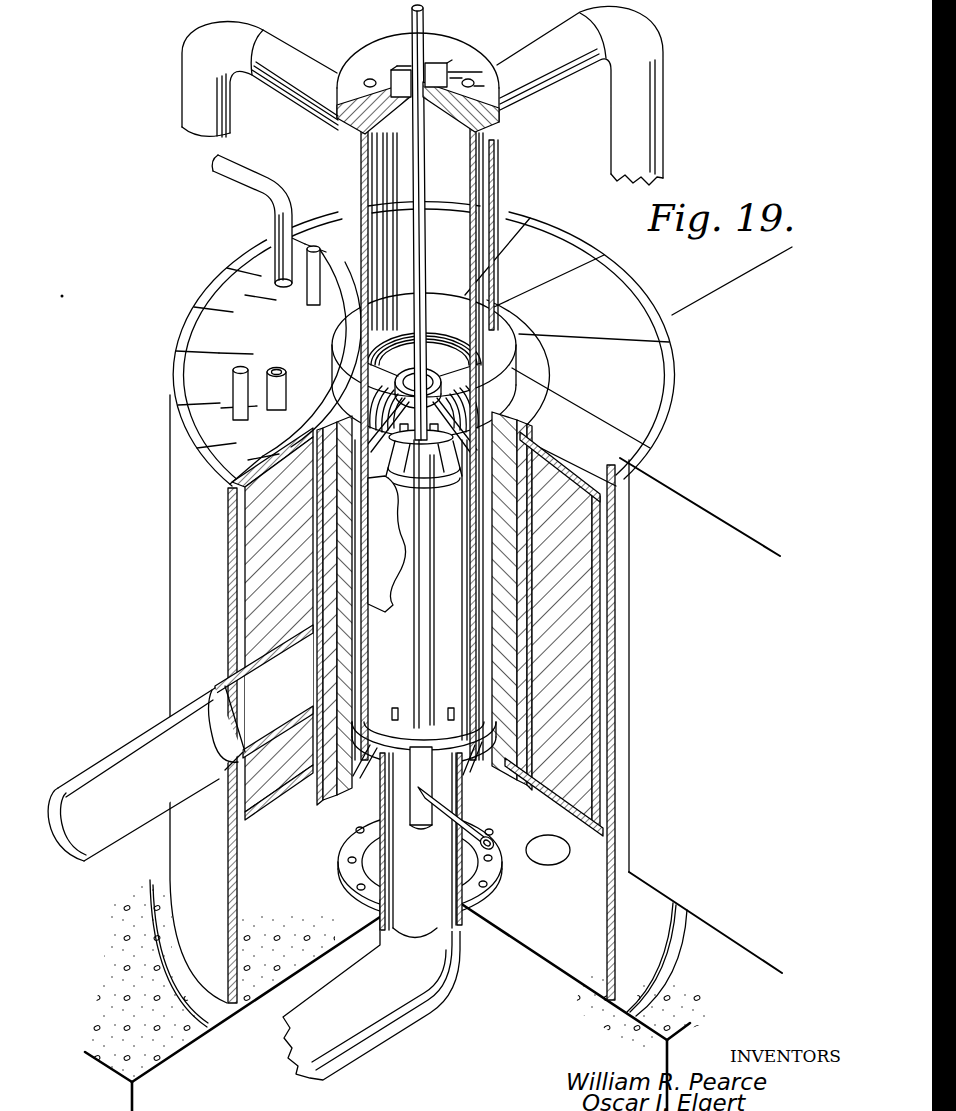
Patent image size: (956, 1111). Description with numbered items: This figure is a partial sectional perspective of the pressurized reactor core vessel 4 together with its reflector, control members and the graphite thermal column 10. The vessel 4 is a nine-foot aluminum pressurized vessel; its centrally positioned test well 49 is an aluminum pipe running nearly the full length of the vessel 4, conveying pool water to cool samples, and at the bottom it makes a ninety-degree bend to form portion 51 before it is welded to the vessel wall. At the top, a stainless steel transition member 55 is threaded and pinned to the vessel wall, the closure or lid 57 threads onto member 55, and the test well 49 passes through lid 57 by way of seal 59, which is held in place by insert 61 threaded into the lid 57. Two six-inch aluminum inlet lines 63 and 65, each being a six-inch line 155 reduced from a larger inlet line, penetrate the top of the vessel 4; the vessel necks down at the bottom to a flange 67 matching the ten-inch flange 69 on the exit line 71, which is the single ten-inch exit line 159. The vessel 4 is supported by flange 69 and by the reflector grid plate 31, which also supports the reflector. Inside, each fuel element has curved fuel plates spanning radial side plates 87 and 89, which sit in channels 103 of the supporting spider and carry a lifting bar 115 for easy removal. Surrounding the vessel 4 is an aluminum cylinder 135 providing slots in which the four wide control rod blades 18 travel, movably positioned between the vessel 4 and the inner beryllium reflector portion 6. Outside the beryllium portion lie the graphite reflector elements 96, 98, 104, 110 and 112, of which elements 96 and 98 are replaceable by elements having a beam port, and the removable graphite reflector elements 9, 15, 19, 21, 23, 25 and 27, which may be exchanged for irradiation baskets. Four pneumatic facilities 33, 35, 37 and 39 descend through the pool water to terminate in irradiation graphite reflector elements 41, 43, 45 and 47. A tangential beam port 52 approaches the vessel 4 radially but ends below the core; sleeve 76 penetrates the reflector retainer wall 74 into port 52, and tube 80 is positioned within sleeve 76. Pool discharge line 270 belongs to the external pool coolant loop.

The pressurized vessel 4 is at (490, 202).
The inner beryllium reflector portion 6 is at (538, 384).
The removable graphite reflector element 9 is at (281, 357).
The thermal column 10 is at (692, 692).
The removable graphite reflector element 15 is at (250, 351).
The control rods 18 is at (391, 557).
The removable graphite reflector element 19 is at (217, 440).
The removable graphite reflector element 21 is at (206, 390).
The removable graphite reflector element 23 is at (212, 348).
The removable graphite reflector element 25 is at (235, 304).
The removable graphite reflector element 27 is at (272, 276).
The reflector grid 31 is at (280, 805).
The pneumatic facility 33 is at (255, 180).
The pneumatic facility 35 is at (320, 256).
The pneumatic facility 37 is at (232, 405).
The pneumatic facility 39 is at (284, 388).
The graphite reflector element 41 is at (260, 302).
The graphite reflector element 43 is at (286, 320).
The graphite reflector element 45 is at (239, 443).
The graphite reflector element 47 is at (262, 420).
The test well 49 is at (411, 22).
The bent portion of test well pipe 51 is at (480, 838).
The tangential beam port 52 is at (272, 650).
The transition member 55 is at (348, 128).
The vessel lid 57 is at (446, 32).
The seal 59 is at (422, 122).
The insert 61 is at (454, 65).
The inlet line 63 is at (541, 93).
The inlet line 65 is at (186, 72).
The vessel flange 67 is at (352, 866).
The exit line flange 69 is at (350, 893).
The exit line 71 is at (375, 1030).
The reflector retainer wall 74 is at (187, 580).
The sleeve 76 is at (212, 688).
The tube 80 is at (106, 763).
The radial side plate 87 is at (414, 646).
The radial side plate 89 is at (433, 646).
The graphite element 96 is at (617, 398).
The graphite element 98 is at (598, 332).
The channel 103 is at (416, 715).
The graphite element 104 is at (250, 476).
The graphite element 110 is at (594, 460).
The graphite element 112 is at (550, 281).
The lifting bar 115 is at (420, 442).
The aluminum cylinder 135 is at (361, 370).
The six-inch line 155 is at (350, 115).
The exit line 159 is at (403, 1083).
The pool discharge line 270 is at (556, 864).